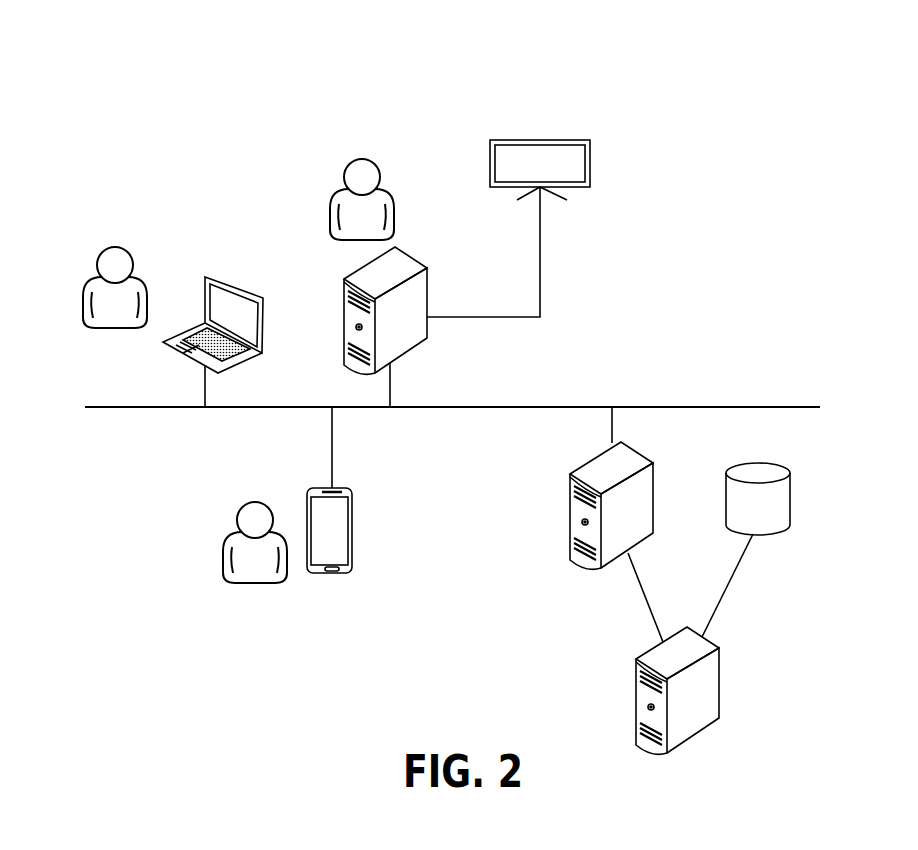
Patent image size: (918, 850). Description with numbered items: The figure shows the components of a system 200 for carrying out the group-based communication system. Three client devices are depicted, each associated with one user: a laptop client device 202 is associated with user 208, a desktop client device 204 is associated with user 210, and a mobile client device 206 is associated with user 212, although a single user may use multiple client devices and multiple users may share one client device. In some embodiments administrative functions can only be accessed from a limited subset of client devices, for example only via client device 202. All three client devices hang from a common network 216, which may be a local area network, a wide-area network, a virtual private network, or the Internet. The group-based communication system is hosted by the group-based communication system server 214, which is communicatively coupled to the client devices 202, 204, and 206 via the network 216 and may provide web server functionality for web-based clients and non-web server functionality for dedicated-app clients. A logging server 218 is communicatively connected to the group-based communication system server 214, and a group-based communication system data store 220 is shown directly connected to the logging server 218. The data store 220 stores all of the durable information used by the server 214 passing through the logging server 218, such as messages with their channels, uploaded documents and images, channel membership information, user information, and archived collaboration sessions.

The system 200 is at (136, 92).
The client device 202 is at (226, 280).
The client device 204 is at (428, 333).
The client device 206 is at (352, 517).
The user 208 is at (125, 248).
The user 210 is at (364, 160).
The user 212 is at (242, 586).
The group-based communication system server 214 is at (622, 562).
The network 216 is at (120, 408).
The logging server 218 is at (688, 744).
The group-based communication system data store 220 is at (780, 534).